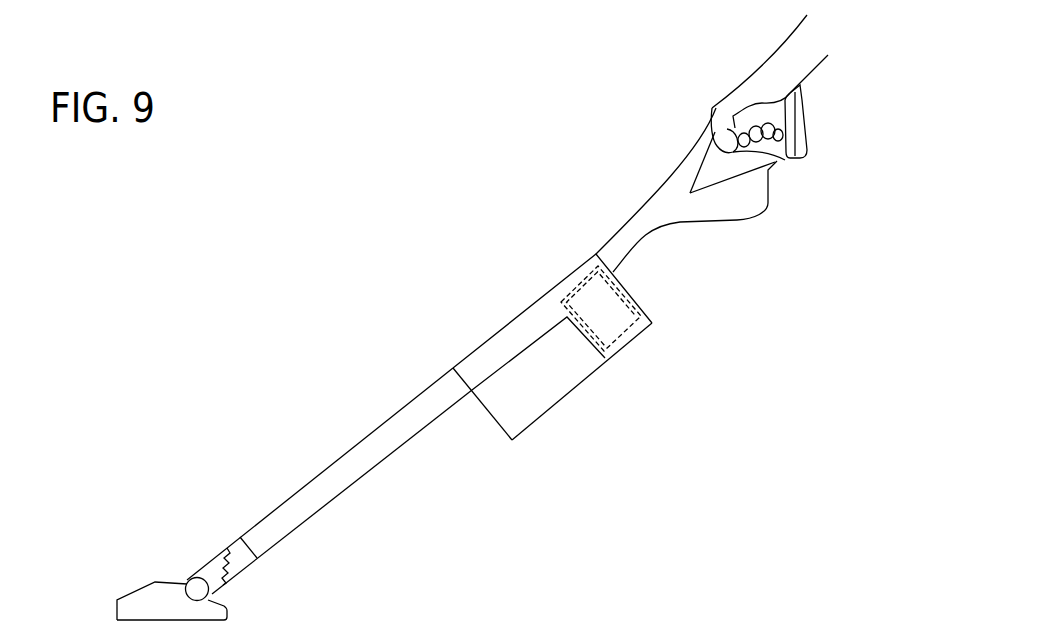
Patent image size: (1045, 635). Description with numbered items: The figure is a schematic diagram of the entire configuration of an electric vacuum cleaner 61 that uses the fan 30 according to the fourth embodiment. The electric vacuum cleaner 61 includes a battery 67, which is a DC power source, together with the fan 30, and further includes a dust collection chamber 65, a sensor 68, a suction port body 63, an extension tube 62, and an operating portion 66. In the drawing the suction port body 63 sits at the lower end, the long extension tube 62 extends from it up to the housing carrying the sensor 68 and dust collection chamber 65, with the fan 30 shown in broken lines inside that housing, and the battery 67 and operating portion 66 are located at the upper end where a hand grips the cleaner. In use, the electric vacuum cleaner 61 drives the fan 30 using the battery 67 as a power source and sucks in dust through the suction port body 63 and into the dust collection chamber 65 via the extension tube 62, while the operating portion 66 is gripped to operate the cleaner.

The electric vacuum cleaner 61 is at (486, 155).
The extension tube 62 is at (374, 431).
The suction port body 63 is at (143, 600).
The dust collection chamber 65 is at (538, 403).
The operating portion 66 is at (703, 125).
The battery 67 is at (740, 203).
The sensor 68 is at (530, 311).
The fan 30 is at (598, 310).